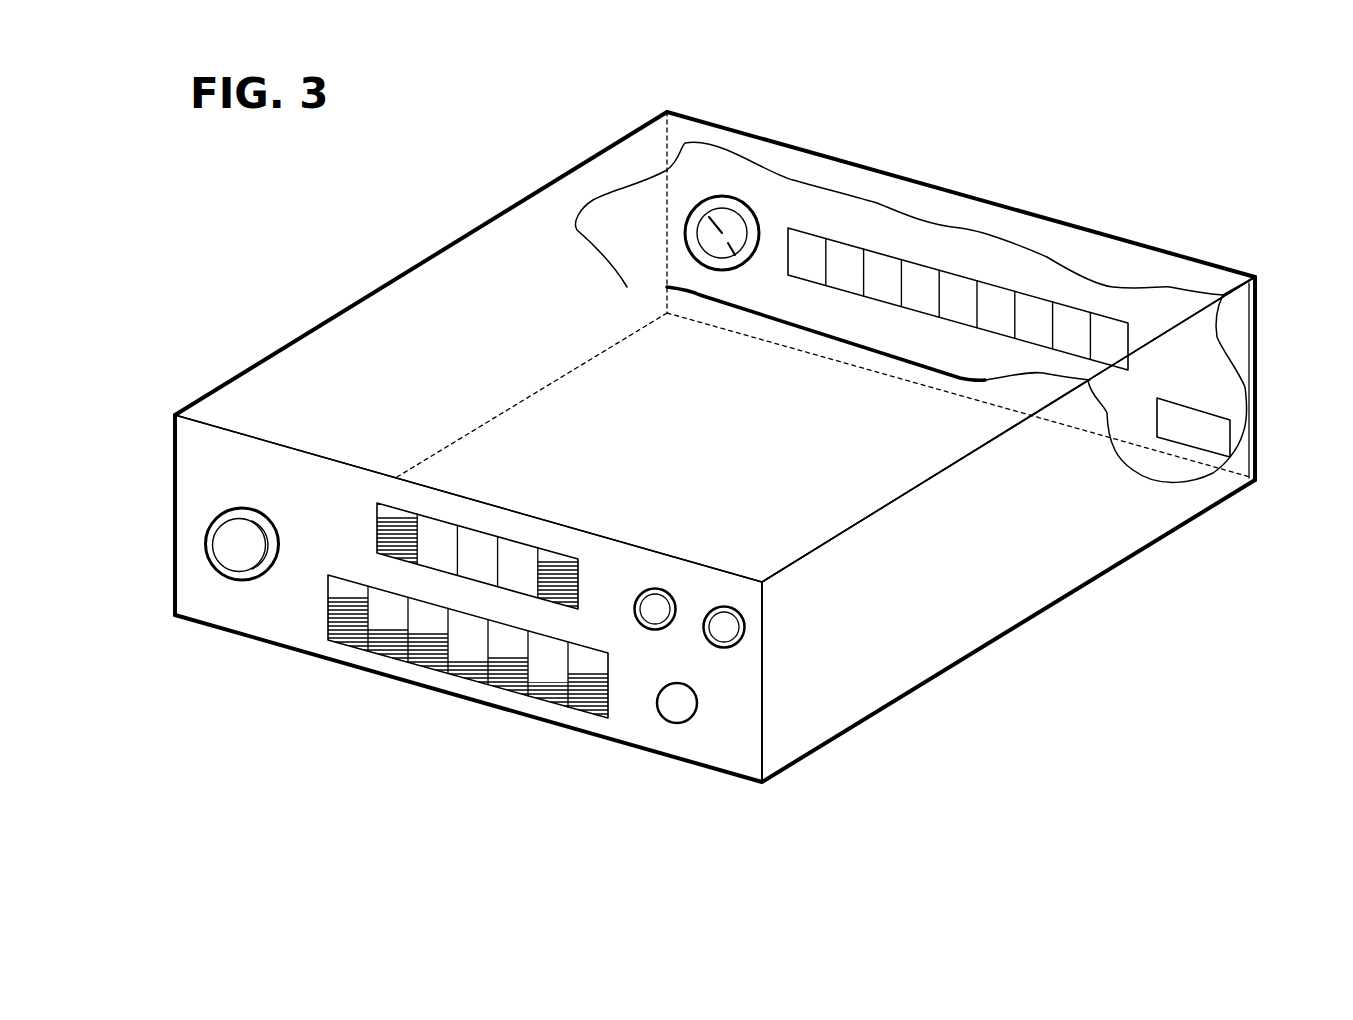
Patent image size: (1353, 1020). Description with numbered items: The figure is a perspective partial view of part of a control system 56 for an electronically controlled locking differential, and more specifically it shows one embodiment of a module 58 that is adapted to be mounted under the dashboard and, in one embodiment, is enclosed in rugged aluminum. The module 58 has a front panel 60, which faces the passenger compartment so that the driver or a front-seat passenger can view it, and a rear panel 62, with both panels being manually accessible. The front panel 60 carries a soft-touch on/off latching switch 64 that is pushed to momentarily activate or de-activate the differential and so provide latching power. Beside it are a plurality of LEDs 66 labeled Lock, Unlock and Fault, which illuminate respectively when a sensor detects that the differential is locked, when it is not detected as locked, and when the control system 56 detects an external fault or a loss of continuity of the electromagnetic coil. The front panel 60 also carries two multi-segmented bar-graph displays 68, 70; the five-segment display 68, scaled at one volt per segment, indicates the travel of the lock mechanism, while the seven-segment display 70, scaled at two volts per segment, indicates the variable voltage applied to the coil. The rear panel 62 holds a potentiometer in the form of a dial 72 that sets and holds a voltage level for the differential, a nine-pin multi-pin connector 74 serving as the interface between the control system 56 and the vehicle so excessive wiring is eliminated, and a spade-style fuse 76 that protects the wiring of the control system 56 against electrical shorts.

The control system 56 is at (1052, 142).
The module 58 is at (1078, 616).
The front panel 60 is at (626, 712).
The rear panel 62 is at (1128, 296).
The on/off latching switch 64 is at (217, 543).
The LEDs 66 is at (726, 658).
The bar-graph display 68 is at (388, 505).
The bar-graph display 70 is at (328, 603).
The potentiometer dial 72 is at (722, 207).
The multi-pin connector 74 is at (794, 203).
The fuse 76 is at (1232, 428).